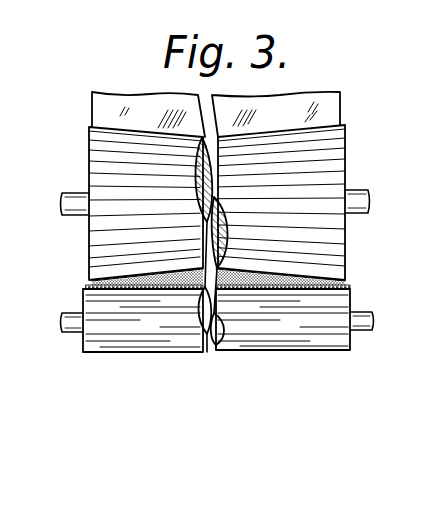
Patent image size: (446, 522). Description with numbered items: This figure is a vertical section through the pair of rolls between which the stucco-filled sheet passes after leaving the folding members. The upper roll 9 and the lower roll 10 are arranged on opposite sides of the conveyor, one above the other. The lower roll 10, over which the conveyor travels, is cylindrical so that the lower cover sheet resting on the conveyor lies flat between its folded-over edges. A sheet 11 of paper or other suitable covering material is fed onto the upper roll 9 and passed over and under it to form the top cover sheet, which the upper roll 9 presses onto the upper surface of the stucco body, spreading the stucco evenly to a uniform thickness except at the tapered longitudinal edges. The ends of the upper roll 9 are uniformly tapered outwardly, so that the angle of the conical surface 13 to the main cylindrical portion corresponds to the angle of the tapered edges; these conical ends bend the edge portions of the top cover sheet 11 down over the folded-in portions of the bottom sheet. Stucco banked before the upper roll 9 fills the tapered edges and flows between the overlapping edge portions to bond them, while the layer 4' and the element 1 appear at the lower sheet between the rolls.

The top cover sheet 11 is at (304, 92).
The conical surface 13 is at (110, 131).
The upper roll 9 is at (283, 133).
The abrasive layer 4' is at (124, 290).
The felt band 1 is at (314, 297).
The lower roll 10 is at (278, 337).